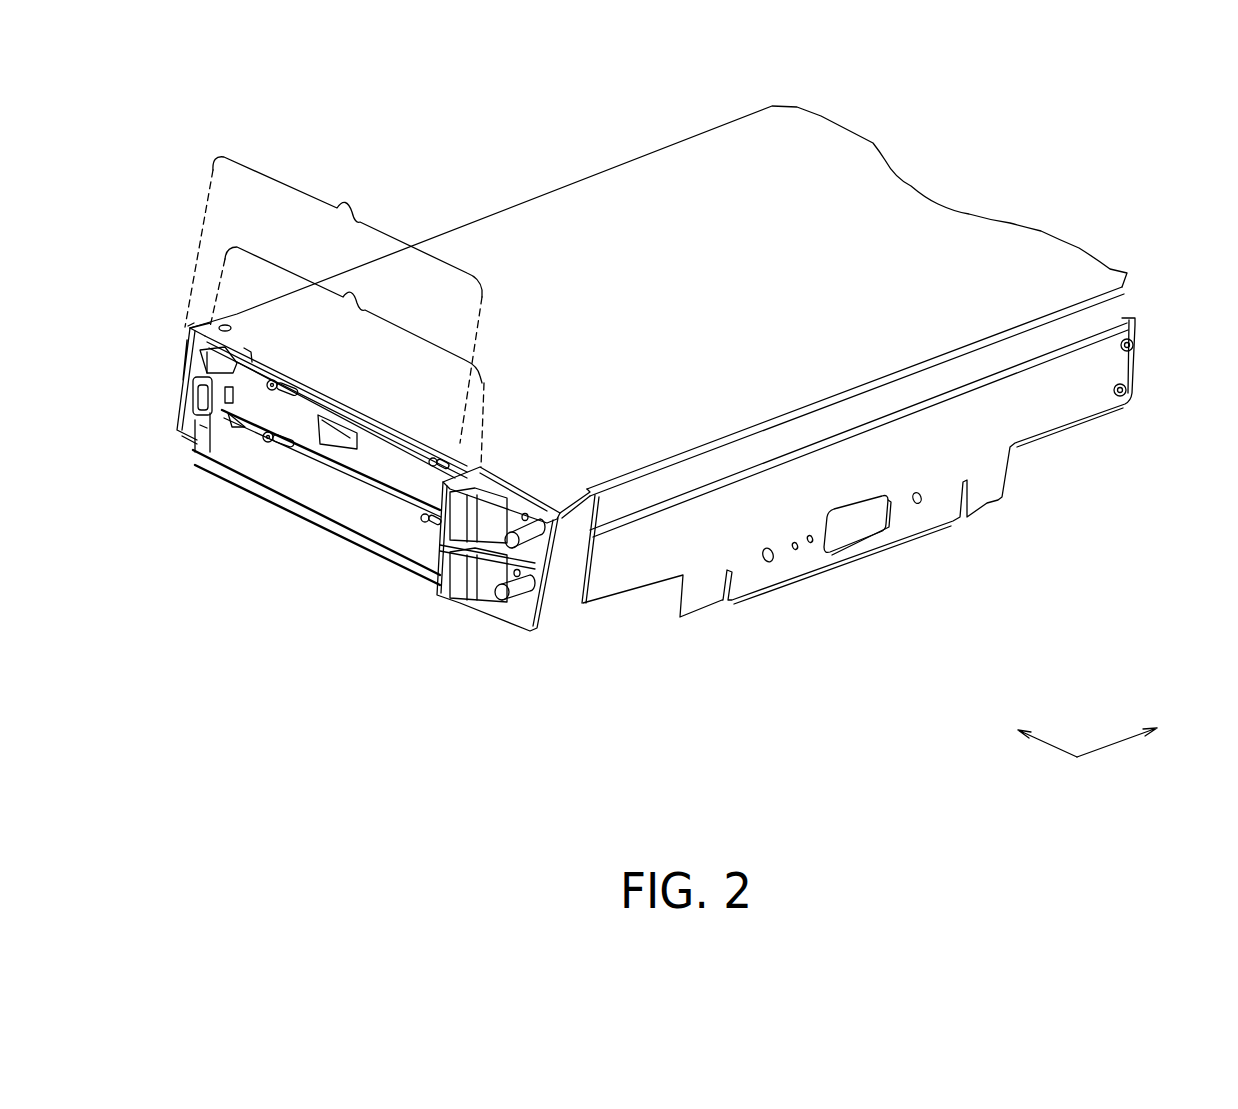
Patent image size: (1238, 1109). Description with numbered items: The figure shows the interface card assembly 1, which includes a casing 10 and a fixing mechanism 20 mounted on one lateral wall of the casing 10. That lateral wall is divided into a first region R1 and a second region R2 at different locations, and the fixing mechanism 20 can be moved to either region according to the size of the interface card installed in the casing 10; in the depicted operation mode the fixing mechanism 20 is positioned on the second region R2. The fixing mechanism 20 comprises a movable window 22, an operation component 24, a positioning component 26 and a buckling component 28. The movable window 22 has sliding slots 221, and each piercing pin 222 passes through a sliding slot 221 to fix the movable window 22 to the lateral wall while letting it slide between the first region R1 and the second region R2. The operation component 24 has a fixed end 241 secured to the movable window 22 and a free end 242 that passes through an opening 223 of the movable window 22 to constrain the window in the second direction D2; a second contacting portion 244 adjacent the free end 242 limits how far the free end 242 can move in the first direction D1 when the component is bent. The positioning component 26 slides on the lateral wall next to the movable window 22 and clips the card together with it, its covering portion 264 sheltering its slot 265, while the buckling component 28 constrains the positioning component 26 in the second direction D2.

The interface card assembly 1 is at (1094, 104).
The casing 10 is at (936, 503).
The fixing mechanism 20 is at (523, 467).
The movable window 22 is at (403, 450).
The sliding slot 221 is at (299, 398).
The piercing pin 222 is at (272, 391).
The opening 223 is at (226, 392).
The operation component 24 is at (186, 400).
The fixed end 241 is at (190, 328).
The free end 242 is at (250, 355).
The second contacting portion 244 is at (206, 438).
The positioning component 26 is at (558, 522).
The covering portion 264 is at (462, 530).
The slot 265 is at (533, 556).
The buckling component 28 is at (545, 540).
The first region R1 is at (349, 200).
The second region R2 is at (348, 288).
The first direction D1 is at (1135, 730).
The second direction D2 is at (1030, 728).